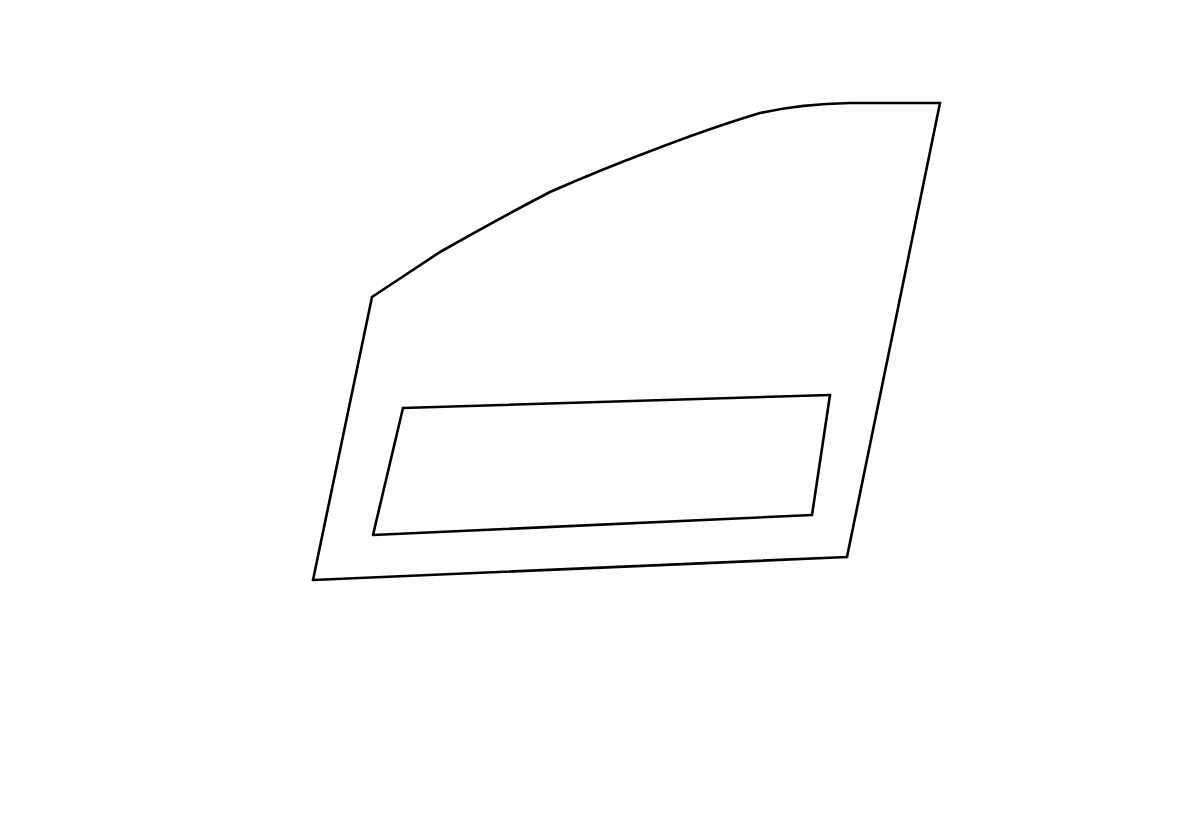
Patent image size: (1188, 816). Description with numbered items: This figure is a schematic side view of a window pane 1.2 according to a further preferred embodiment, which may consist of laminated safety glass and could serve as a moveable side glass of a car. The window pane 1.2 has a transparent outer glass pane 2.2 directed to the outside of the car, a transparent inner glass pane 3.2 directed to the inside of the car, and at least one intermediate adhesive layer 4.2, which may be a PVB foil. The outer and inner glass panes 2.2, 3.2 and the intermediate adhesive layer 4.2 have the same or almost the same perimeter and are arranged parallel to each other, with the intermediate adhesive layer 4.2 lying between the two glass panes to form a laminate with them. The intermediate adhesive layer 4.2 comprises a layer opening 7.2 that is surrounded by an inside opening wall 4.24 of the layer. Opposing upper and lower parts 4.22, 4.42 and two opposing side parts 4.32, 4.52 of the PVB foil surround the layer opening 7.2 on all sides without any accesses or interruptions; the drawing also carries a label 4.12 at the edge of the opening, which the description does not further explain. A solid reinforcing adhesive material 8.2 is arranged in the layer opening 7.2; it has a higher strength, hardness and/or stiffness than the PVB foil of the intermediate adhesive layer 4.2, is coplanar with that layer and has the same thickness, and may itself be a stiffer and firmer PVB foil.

The window pane 1.2 is at (398, 245).
The outer glass pane 2.2 is at (920, 192).
The inner glass pane 3.2 is at (668, 344).
The intermediate adhesive layer 4.2 is at (668, 344).
The inner right edge of opening 4.12 is at (825, 437).
The upper part 4.22 is at (653, 202).
The inside opening wall 4.24 is at (552, 402).
The side part 4.32 is at (843, 478).
The lower part 4.42 is at (542, 553).
The side part 4.52 is at (342, 473).
The layer opening 7.2 is at (715, 495).
The reinforcing adhesive material 8.2 is at (417, 510).